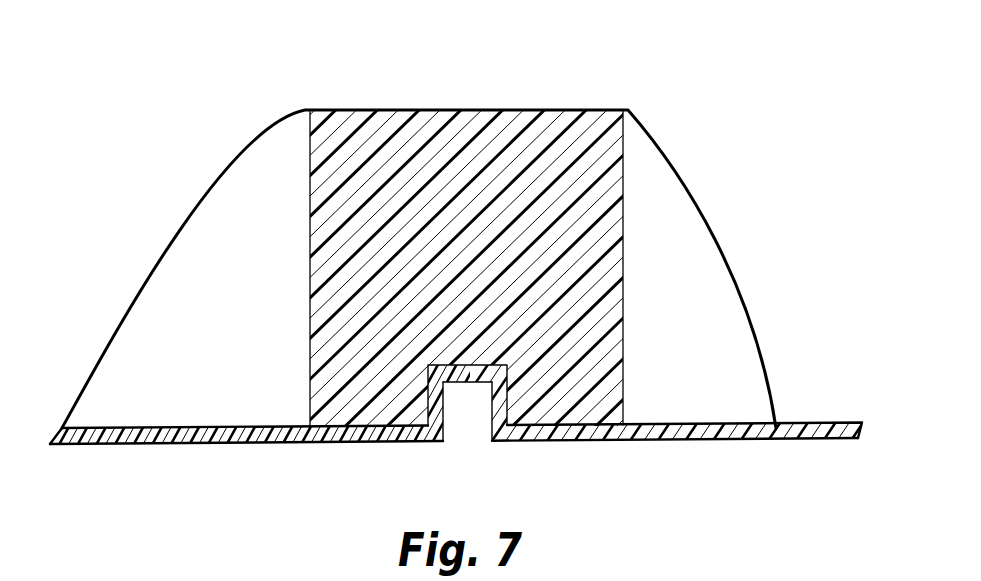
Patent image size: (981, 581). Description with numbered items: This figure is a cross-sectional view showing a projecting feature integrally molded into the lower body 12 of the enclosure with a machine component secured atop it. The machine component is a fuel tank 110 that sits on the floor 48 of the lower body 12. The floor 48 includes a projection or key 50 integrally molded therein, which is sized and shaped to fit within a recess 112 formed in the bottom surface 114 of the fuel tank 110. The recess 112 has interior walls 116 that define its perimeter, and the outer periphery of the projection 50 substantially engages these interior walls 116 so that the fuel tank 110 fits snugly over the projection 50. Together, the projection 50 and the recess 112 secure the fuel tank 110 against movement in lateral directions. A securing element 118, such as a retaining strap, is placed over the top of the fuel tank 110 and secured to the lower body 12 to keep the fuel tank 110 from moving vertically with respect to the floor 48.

The fuel tank 110 is at (425, 130).
The securing element 118 is at (670, 158).
The projection 50 is at (450, 365).
The floor 48 is at (698, 422).
The lower body 12 is at (733, 440).
The bottom surface 114 is at (342, 445).
The recess 112 is at (443, 410).
The interior walls 116 is at (492, 410).